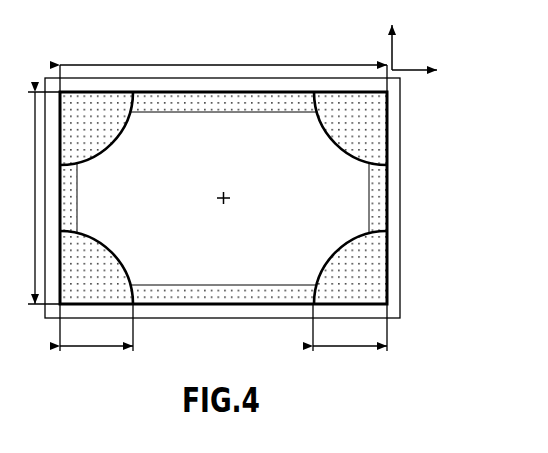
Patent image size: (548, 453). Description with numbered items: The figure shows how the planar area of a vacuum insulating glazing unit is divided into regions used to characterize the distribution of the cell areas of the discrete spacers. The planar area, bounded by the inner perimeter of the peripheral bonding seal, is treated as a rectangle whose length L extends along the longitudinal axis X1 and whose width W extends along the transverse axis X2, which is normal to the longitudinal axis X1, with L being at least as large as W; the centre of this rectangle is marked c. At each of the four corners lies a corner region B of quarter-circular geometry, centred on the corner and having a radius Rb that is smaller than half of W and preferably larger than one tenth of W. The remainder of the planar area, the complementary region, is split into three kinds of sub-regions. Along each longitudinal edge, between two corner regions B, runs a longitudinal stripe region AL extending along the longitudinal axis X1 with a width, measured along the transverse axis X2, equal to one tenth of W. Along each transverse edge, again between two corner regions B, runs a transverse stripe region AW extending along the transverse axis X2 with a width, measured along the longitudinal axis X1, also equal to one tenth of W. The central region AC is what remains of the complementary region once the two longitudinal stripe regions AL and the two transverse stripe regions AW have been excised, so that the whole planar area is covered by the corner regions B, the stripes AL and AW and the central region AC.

The corner region B is at (223, 198).
The longitudinal stripe region AL is at (173, 103).
The transverse stripe region AW is at (73, 213).
The central region AC is at (264, 157).
The centre of the rectangular planar area c is at (224, 210).
The length of the rectangular planar area L is at (223, 62).
The width of the rectangular planar area W is at (31, 198).
The radius of the B-region Rb is at (223, 327).
The longitudinal axis X1 is at (431, 67).
The transverse axis X2 is at (397, 35).